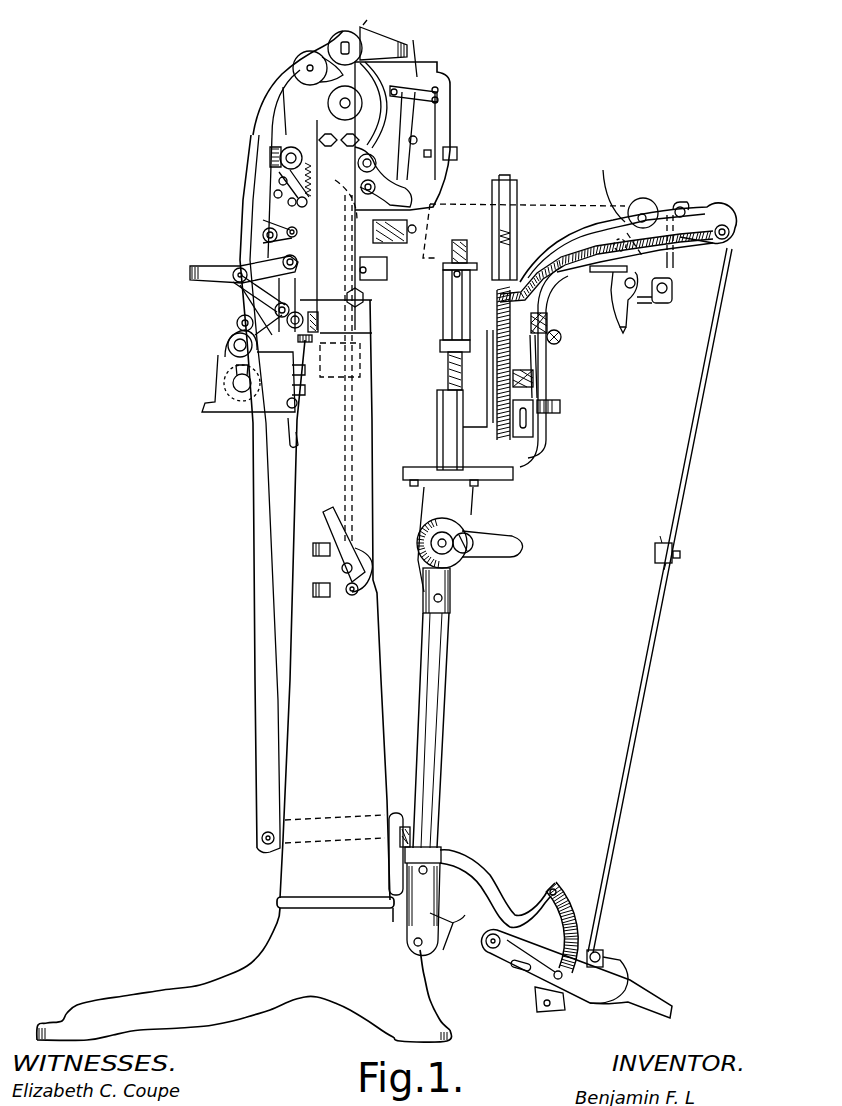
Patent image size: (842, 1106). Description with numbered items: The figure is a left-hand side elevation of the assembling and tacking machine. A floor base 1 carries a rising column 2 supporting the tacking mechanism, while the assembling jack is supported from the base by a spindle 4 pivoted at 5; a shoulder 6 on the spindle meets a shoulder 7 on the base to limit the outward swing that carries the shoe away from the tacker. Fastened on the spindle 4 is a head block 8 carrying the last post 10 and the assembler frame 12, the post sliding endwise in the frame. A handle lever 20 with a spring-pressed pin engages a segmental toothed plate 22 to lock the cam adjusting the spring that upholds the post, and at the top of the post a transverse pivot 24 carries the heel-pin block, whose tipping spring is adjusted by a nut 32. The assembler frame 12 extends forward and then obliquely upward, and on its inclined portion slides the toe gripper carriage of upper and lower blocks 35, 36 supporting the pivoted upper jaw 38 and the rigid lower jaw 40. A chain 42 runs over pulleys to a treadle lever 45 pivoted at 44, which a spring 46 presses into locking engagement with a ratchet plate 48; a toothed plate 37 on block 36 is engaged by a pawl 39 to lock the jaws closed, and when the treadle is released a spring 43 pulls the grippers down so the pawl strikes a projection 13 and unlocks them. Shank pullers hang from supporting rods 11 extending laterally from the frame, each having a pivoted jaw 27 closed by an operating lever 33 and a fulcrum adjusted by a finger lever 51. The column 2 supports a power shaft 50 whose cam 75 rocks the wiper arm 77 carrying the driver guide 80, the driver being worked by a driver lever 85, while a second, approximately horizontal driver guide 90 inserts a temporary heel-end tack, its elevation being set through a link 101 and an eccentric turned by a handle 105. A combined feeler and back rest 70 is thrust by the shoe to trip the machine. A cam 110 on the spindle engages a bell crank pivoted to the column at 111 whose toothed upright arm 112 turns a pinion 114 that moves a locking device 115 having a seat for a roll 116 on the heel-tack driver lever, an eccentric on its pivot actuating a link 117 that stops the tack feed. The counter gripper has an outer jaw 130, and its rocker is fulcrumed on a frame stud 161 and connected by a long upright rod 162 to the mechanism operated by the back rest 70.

The floor base 1 is at (253, 962).
The column 2 is at (262, 305).
The spindle 4 is at (432, 812).
The pivot 5 is at (420, 945).
The shoulder 6 is at (447, 913).
The shoulder 7 is at (445, 925).
The head block 8 is at (455, 600).
The last post 10 is at (450, 383).
The supporting rods 11 is at (525, 420).
The assembler frame 12 is at (530, 458).
The projection 13 is at (535, 340).
The handle lever 20 is at (520, 546).
The segmental toothed plate 22 is at (462, 564).
The pivot 24 is at (455, 272).
The coöperating jaw 27 is at (502, 182).
The nut 32 is at (442, 340).
The operating lever 33 is at (530, 365).
The upper block 35 is at (680, 205).
The lower block 36 is at (668, 280).
The toothed plate 37 is at (598, 273).
The upper gripping jaw 38 is at (642, 198).
The pawl 39 is at (622, 328).
The lower jaw 40 is at (603, 172).
The chain 42 is at (721, 283).
The spring 43 is at (553, 277).
The pivot 44 is at (495, 950).
The treadle lever 45 is at (653, 1002).
The spring 46 is at (517, 968).
The ratchet plate 48 is at (558, 1010).
The shaft 50 is at (330, 107).
The finger lever 51 is at (561, 340).
The combined feeler and back rest 70 is at (388, 237).
The cam 75 is at (407, 112).
The arm 77 is at (440, 120).
The driver guide 80 is at (413, 128).
The driver lever 85 is at (383, 42).
The second driver guide 90 is at (364, 300).
The link 101 is at (347, 477).
The handle 105 is at (330, 522).
The cam 110 is at (420, 843).
The pivot 111 is at (260, 843).
The upright arm 112 is at (263, 647).
The pinion 114 is at (220, 390).
The locking device 115 is at (228, 335).
The roll 116 is at (236, 324).
The link 117 is at (237, 312).
The outer jaw 130 is at (413, 195).
The frame stud 161 is at (270, 152).
The upright rod 162 is at (267, 197).